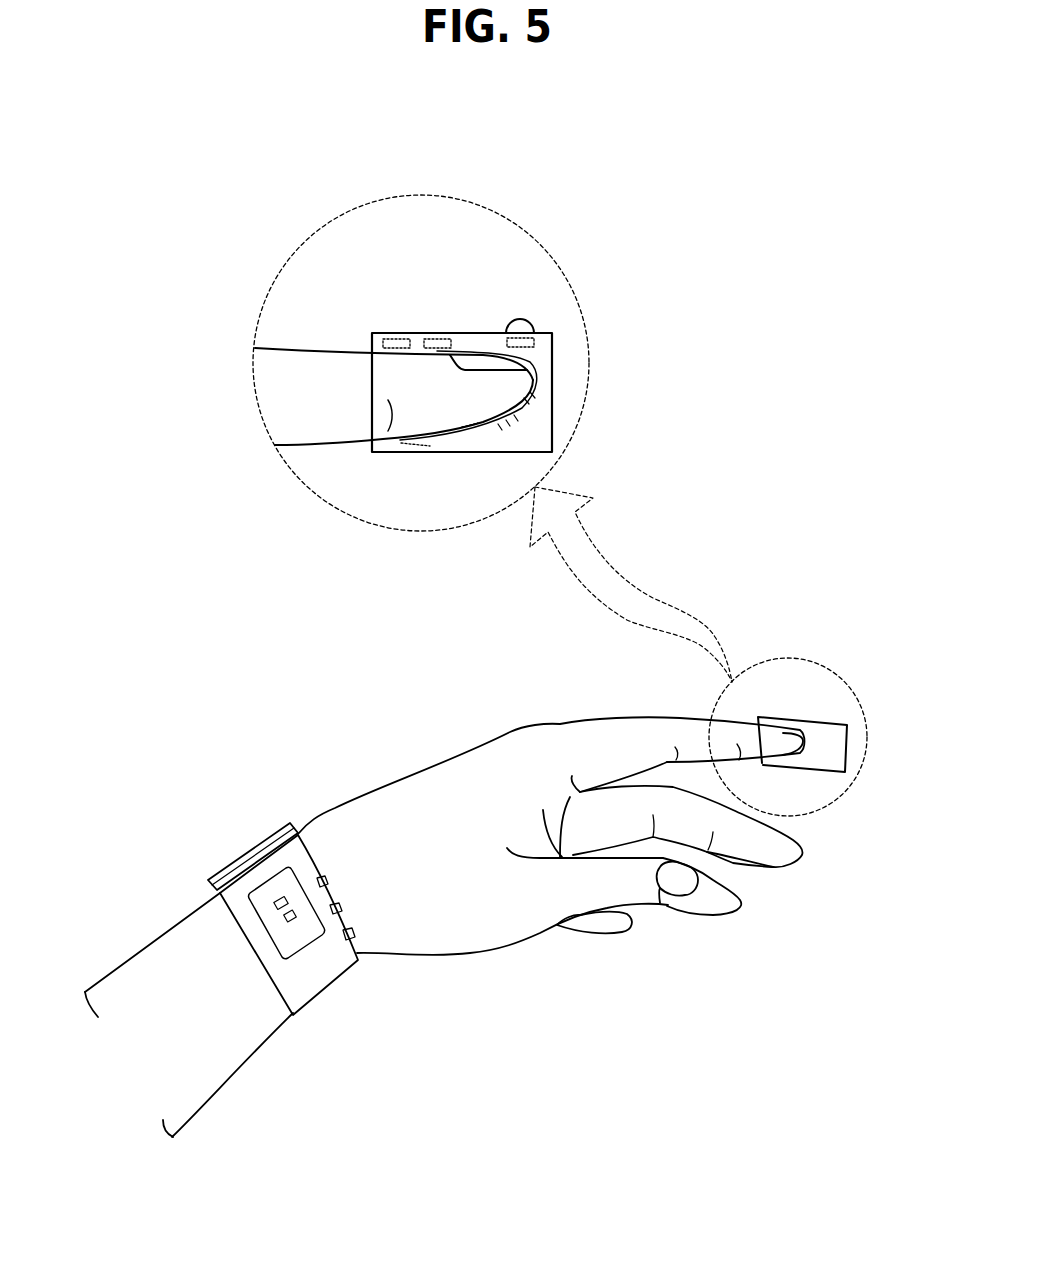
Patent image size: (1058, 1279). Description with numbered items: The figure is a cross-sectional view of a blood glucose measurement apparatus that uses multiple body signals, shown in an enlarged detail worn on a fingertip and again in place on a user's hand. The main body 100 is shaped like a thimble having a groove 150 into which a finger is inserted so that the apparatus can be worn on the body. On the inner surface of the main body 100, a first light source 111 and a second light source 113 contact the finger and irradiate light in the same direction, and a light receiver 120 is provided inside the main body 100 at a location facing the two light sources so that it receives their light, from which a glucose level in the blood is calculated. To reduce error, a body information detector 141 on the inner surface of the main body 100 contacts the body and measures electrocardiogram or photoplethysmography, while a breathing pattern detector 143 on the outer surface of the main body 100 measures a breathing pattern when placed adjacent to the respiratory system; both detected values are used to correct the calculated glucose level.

The main body 100 is at (448, 247).
The first light source 111 is at (393, 333).
The second light source 113 is at (447, 333).
The light receiver 120 is at (416, 445).
The body information detector 141 is at (503, 427).
The breathing pattern detector 143 is at (520, 319).
The groove 150 is at (470, 427).